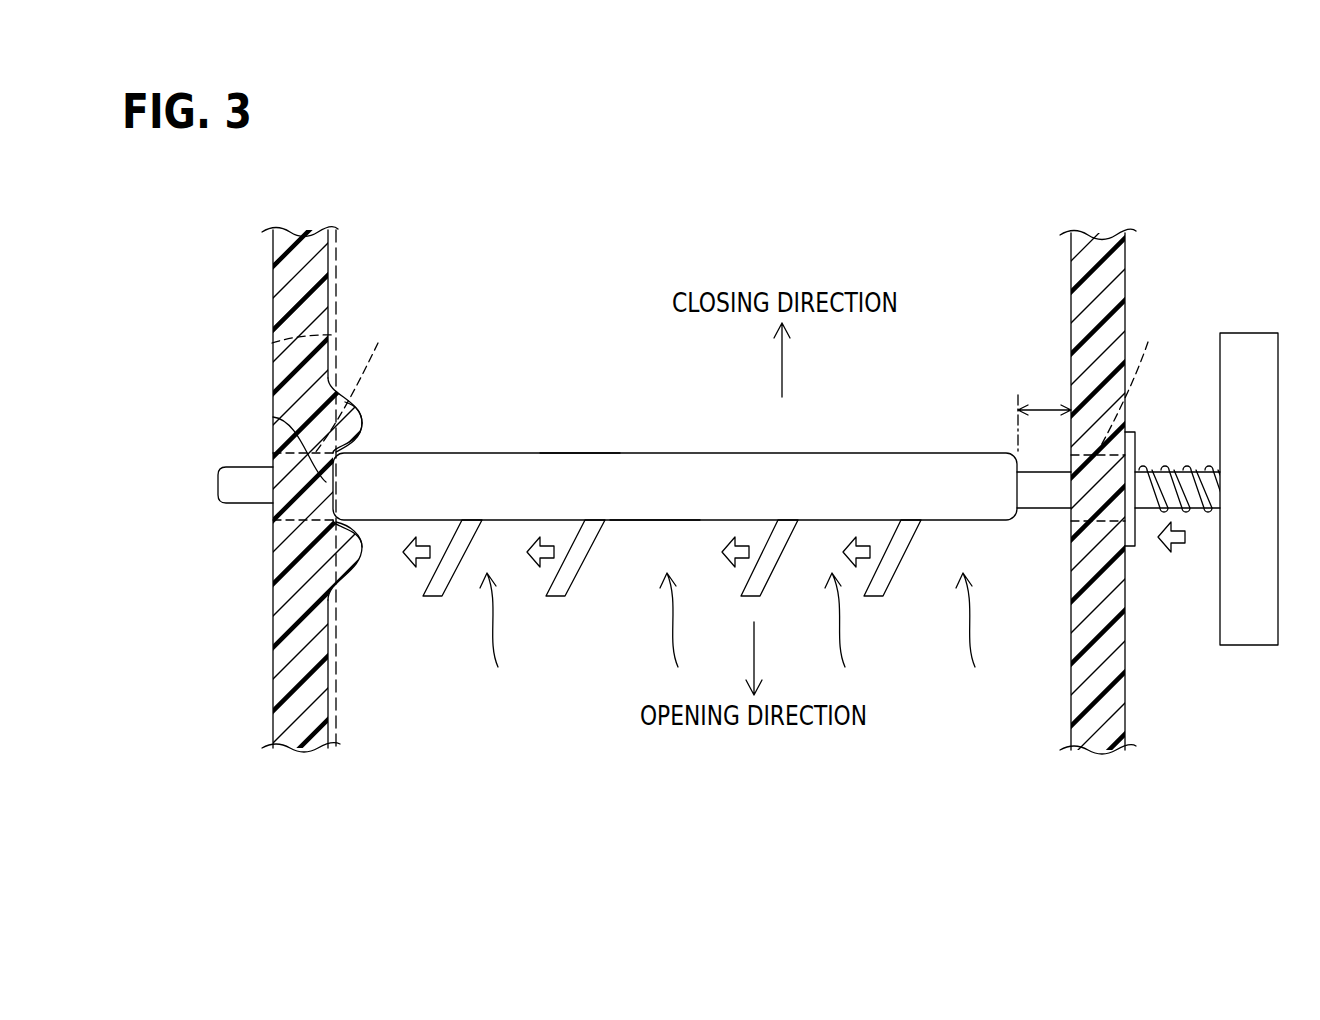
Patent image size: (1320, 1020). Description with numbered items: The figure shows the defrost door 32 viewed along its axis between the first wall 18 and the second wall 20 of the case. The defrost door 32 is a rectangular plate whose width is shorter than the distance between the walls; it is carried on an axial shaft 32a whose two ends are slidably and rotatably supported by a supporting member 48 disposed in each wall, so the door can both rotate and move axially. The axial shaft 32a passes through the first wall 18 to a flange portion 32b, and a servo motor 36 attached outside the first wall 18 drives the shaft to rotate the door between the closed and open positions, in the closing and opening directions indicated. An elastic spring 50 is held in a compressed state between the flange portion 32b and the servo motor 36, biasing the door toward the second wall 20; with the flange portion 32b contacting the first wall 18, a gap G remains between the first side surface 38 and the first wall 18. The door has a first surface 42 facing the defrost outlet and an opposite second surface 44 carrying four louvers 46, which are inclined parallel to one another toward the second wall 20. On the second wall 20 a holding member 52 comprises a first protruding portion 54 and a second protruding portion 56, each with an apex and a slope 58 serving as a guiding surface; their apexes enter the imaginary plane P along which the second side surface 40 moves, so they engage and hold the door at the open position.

The first wall 18 is at (1110, 260).
The second wall 20 is at (273, 259).
The defrost door 32 is at (703, 460).
The axial shaft 32a is at (235, 500).
The flange portion 32b is at (1137, 440).
The servo motor 36 is at (1246, 340).
The first side surface 38 is at (1018, 492).
The second side surface 40 is at (273, 417).
The first surface 42 is at (575, 453).
The second surface 44 is at (633, 522).
The louvers 46 is at (563, 597).
The supporting member 48 is at (738, 382).
The elastic spring 50 is at (1210, 505).
The holding member 52 is at (362, 415).
The first protruding portion 54 is at (350, 433).
The second protruding portion 56 is at (350, 557).
The slope 58 is at (332, 393).
The imaginary plane P is at (272, 343).
The gap G is at (1044, 413).